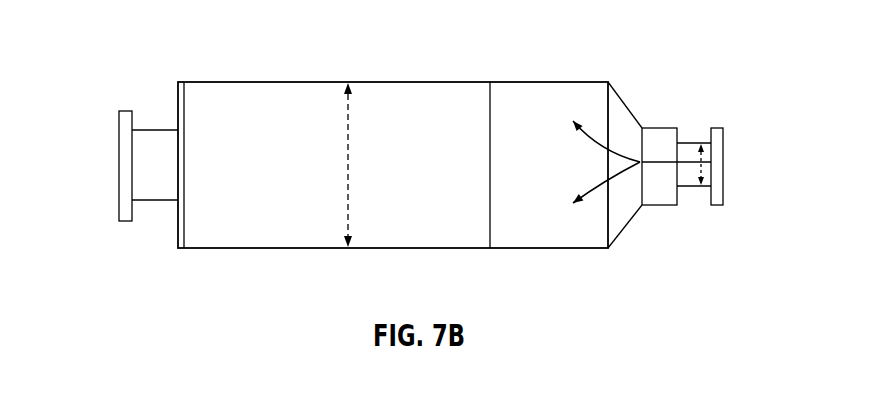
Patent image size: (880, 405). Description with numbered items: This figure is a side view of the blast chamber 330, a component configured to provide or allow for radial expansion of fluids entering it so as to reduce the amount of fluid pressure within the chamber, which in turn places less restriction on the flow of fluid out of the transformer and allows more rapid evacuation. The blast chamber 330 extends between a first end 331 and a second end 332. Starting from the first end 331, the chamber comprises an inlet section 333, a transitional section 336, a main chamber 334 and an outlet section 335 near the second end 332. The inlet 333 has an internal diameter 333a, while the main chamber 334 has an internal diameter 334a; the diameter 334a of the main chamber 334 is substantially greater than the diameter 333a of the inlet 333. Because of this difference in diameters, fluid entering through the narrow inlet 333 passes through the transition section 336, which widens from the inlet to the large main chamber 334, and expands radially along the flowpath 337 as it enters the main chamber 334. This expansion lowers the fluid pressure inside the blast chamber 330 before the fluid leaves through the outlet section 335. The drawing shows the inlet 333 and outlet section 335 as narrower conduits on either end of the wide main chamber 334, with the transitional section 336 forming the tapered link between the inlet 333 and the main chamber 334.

The blast chamber 330 is at (697, 38).
The first end 331 is at (718, 203).
The second end 332 is at (122, 209).
The inlet section 333 is at (694, 150).
The internal diameter of inlet 333a is at (705, 164).
The main chamber 334 is at (228, 93).
The internal diameter of main chamber 334a is at (346, 118).
The outlet section 335 is at (163, 142).
The transitional section 336 is at (612, 99).
The flowpath 337 is at (653, 165).